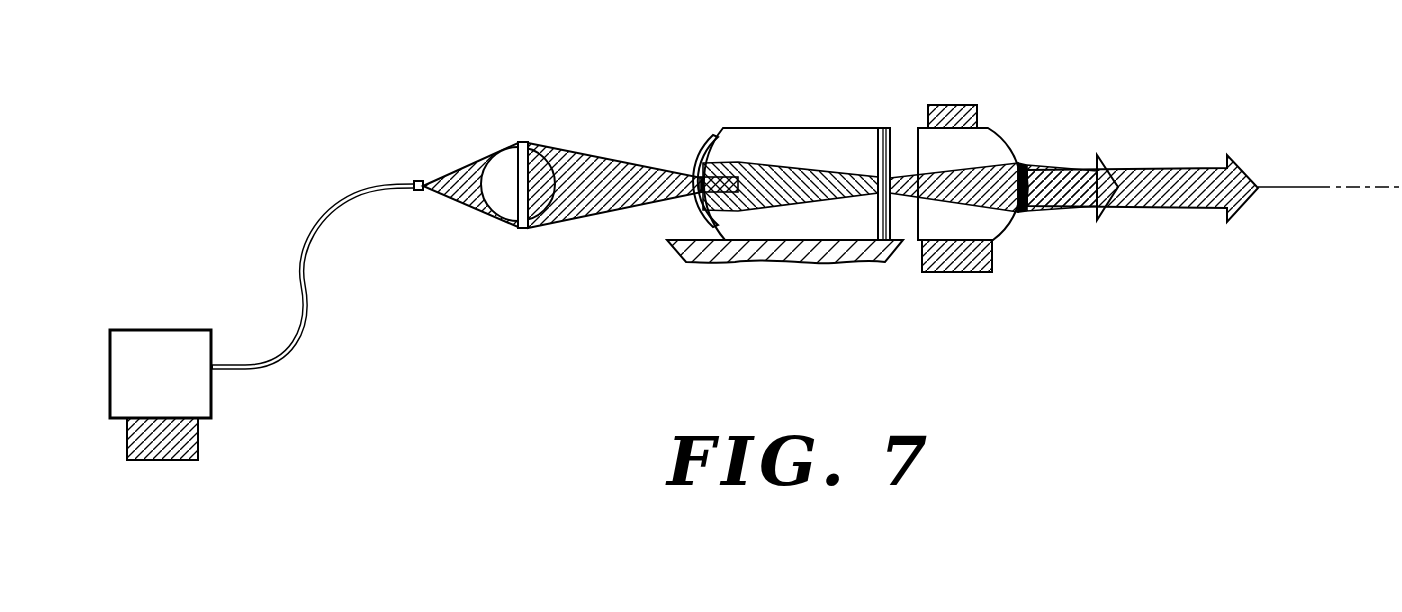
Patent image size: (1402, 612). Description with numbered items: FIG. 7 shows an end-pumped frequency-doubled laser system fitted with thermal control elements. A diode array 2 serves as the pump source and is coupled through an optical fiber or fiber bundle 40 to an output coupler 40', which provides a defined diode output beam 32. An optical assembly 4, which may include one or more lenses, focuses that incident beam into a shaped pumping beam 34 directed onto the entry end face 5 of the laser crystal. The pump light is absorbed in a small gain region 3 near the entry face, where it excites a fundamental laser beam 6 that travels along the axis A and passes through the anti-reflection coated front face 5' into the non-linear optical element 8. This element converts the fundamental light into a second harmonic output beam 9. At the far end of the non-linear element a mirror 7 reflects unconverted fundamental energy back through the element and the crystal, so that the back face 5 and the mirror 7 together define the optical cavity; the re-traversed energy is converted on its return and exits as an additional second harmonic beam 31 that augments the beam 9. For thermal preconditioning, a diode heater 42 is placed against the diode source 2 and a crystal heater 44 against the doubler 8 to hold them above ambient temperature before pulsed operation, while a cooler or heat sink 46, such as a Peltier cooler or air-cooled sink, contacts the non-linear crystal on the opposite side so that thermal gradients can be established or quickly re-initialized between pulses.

The diode array 2 is at (166, 383).
The diode heater 42 is at (198, 447).
The optical fiber or fiber bundle 40 is at (312, 276).
The output coupler 40' is at (387, 161).
The diode output beam 32 is at (476, 160).
The optical assembly 4 is at (519, 231).
The pumping beam 34 is at (606, 166).
The gain region 3 is at (720, 177).
The fundamental laser beam 6 is at (856, 176).
The entry end face 5 is at (769, 264).
The front face 5' is at (899, 151).
The crystal heater 44 is at (948, 106).
The cooler or heat sink 46 is at (970, 273).
The non-linear optical element 8 is at (985, 150).
The mirror 7 is at (1020, 214).
The additional second harmonic beam 31 is at (1105, 172).
The final output beam 9 is at (1168, 206).
The axis A is at (1335, 186).